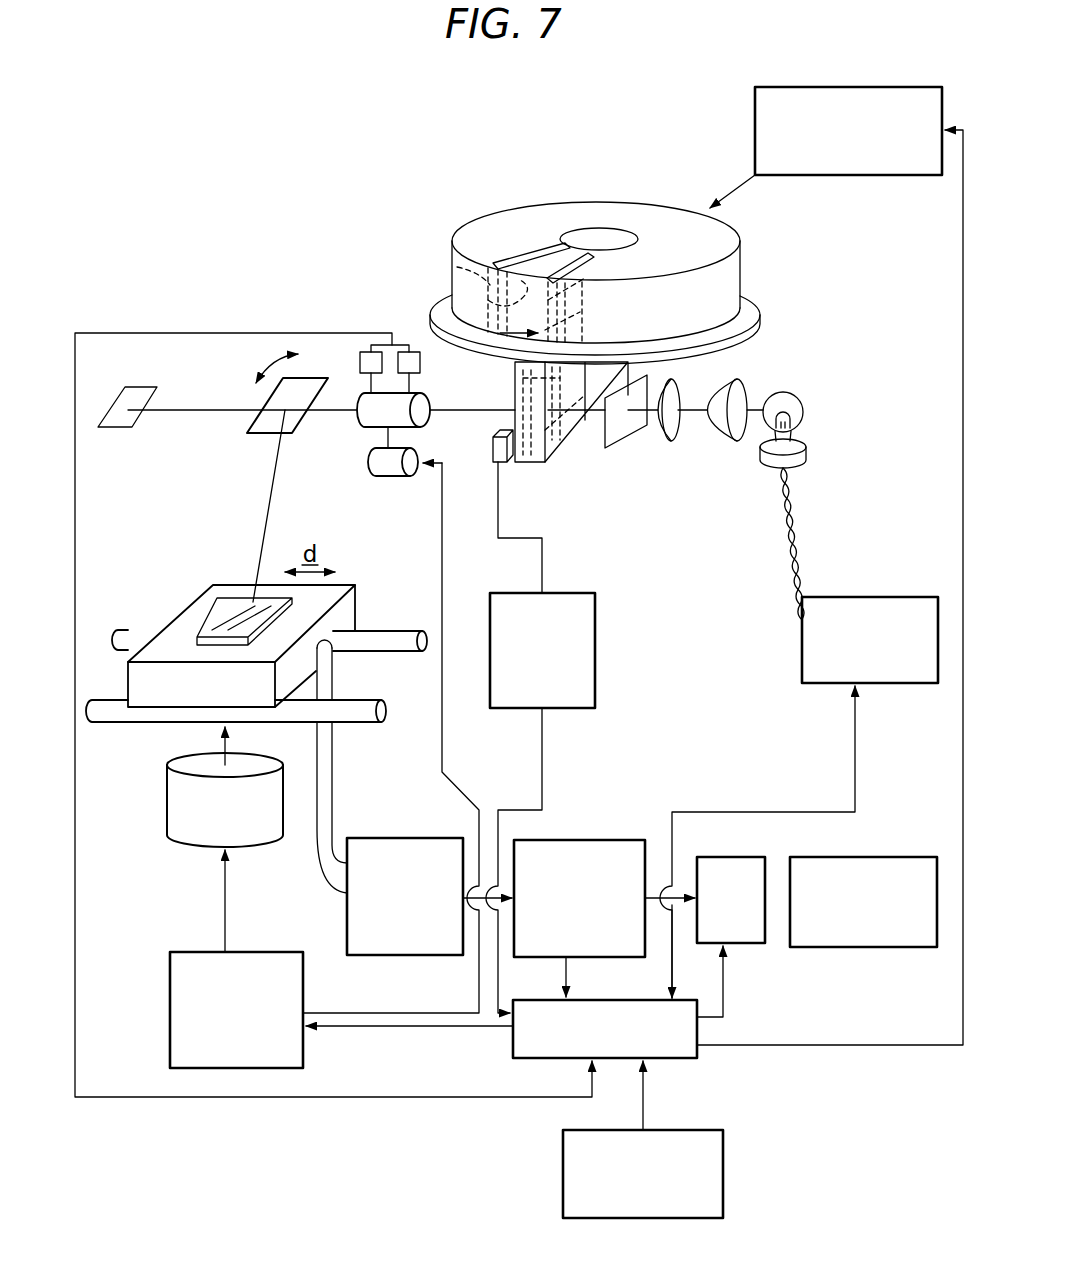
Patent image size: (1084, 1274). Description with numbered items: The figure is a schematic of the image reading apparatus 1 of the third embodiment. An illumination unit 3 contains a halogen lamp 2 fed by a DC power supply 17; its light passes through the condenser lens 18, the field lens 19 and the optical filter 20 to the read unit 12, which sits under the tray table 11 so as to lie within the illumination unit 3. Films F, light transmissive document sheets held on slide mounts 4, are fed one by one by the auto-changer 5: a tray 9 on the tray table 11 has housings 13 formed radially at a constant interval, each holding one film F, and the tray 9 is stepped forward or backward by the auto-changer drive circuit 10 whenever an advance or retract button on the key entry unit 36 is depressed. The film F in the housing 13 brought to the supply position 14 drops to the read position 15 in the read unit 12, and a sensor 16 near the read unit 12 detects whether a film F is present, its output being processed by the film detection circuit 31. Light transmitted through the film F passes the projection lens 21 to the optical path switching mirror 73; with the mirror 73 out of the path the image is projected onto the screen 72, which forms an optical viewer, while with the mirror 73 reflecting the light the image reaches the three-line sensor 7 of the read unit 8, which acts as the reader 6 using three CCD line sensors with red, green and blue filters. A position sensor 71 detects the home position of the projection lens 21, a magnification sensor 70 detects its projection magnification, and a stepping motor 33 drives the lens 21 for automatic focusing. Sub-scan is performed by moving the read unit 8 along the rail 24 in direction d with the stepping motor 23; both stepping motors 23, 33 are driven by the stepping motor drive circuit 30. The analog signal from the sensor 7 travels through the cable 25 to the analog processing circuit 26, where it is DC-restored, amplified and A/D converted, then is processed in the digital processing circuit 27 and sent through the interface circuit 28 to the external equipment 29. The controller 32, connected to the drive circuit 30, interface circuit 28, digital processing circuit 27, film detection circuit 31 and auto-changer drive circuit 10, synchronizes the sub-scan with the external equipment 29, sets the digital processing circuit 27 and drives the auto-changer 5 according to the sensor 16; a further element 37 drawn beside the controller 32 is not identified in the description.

The image reading apparatus 1 is at (322, 250).
The halogen lamp 2 is at (800, 395).
The illumination unit 3 is at (660, 462).
The slide mount 4 is at (457, 267).
The auto-changer 5 is at (662, 188).
The reader 6 is at (131, 611).
The line sensor 7 is at (241, 590).
The read unit 8 is at (192, 601).
The tray 9 is at (748, 254).
The auto-changer drive circuit 10 is at (918, 84).
The tray table 11 is at (760, 305).
The read unit 12 is at (568, 453).
The housing 13 is at (555, 247).
The supply position 14 is at (430, 311).
The read position 15 is at (528, 466).
The sensor 16 is at (491, 459).
The DC power supply 17 is at (916, 593).
The condenser lens 18 is at (743, 383).
The field lens 19 is at (687, 392).
The optical filter 20 is at (623, 447).
The projection lens 21 is at (432, 407).
The stepping motor 23 is at (182, 842).
The rail 24 is at (383, 703).
The cable 25 is at (331, 783).
The analog processing circuit 26 is at (432, 837).
The digital processing circuit 27 is at (622, 838).
The interface circuit 28 is at (745, 856).
The external equipment 29 is at (907, 857).
The stepping motor drive circuit 30 is at (286, 950).
The film detection circuit 31 is at (572, 590).
The controller 32 is at (512, 1042).
The stepping motor 33 is at (419, 452).
The key entry unit 36 is at (675, 1127).
The control signal 37 is at (706, 1070).
The magnification sensor 70 is at (358, 360).
The position sensor 71 is at (423, 365).
The screen 72 is at (144, 388).
The optical path switching mirror 73 is at (272, 395).
The film F is at (483, 290).